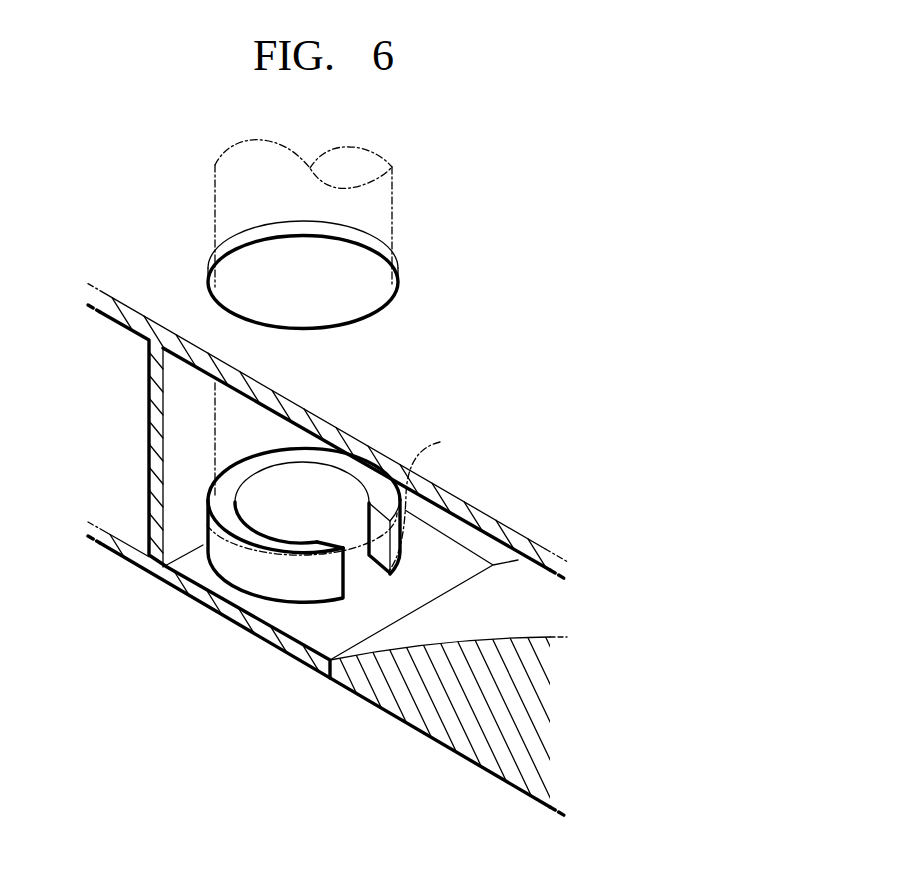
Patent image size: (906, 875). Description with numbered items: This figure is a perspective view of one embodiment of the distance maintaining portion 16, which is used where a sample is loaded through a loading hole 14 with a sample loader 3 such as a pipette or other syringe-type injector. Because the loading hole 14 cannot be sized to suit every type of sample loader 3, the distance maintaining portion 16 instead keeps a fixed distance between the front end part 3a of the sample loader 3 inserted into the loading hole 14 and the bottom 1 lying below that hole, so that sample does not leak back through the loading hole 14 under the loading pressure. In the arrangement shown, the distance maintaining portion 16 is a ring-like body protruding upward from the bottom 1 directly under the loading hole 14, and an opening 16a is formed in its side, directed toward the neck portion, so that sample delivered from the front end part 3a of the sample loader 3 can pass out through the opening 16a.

The bottom 1 is at (335, 630).
The sample loader 3 is at (383, 210).
The front end part 3a is at (427, 498).
The loading hole 14 is at (230, 252).
The distance maintaining portion 16 is at (240, 573).
The opening 16a is at (352, 566).